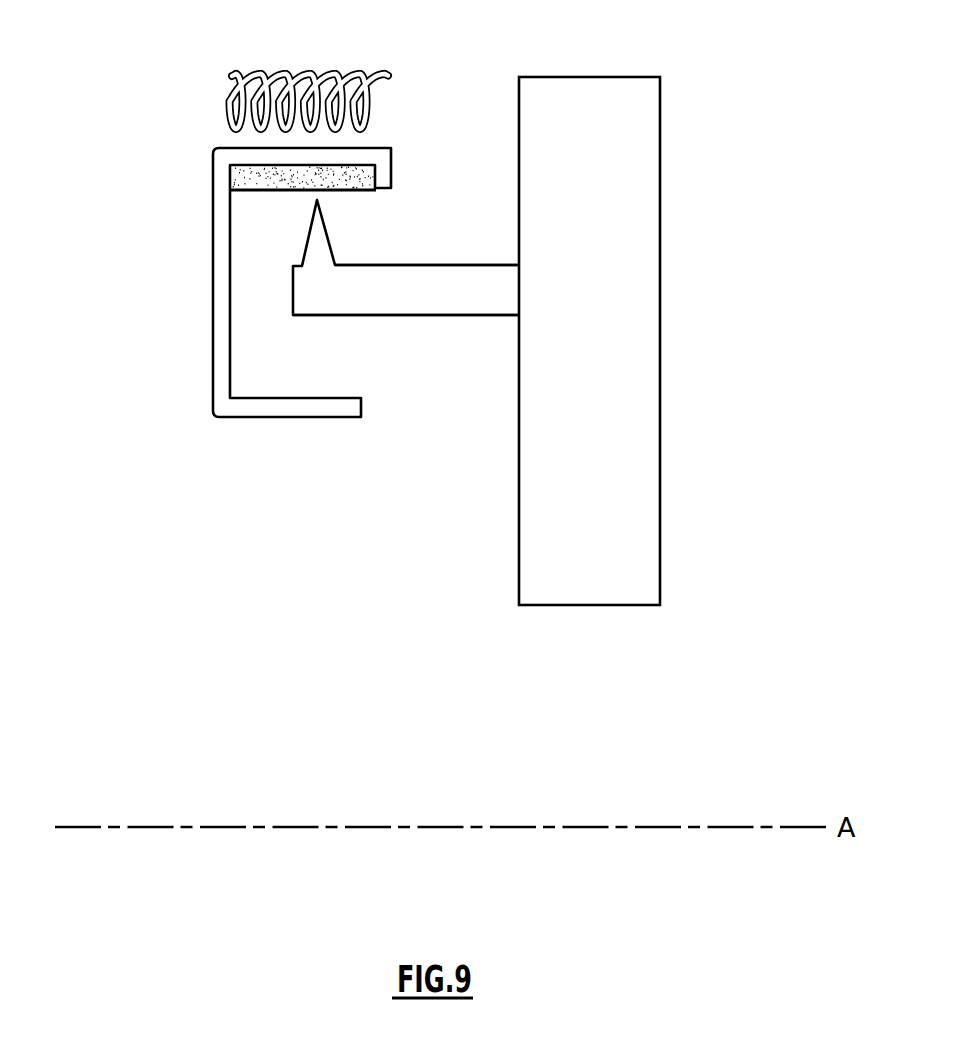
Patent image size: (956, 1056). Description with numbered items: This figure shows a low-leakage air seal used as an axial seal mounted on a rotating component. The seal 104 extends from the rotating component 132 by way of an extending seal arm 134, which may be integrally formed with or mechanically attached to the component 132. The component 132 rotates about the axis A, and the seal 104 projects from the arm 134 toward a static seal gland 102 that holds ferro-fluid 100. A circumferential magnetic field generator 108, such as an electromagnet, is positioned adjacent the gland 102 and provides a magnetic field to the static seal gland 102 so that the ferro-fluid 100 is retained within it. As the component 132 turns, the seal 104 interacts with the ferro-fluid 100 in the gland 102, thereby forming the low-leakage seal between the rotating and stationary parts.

The ferro-fluid 100 is at (347, 189).
The static seal gland 102 is at (212, 172).
The seal 104 is at (315, 288).
The circumferential magnetic field generator 108 is at (338, 72).
The rotating component 132 is at (648, 374).
The extending seal arm 134 is at (418, 317).